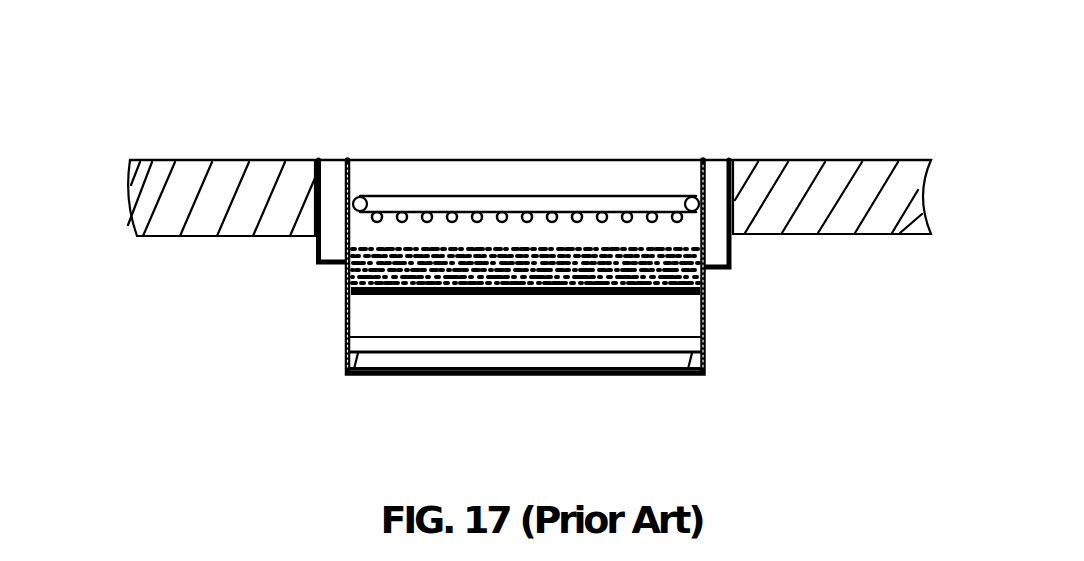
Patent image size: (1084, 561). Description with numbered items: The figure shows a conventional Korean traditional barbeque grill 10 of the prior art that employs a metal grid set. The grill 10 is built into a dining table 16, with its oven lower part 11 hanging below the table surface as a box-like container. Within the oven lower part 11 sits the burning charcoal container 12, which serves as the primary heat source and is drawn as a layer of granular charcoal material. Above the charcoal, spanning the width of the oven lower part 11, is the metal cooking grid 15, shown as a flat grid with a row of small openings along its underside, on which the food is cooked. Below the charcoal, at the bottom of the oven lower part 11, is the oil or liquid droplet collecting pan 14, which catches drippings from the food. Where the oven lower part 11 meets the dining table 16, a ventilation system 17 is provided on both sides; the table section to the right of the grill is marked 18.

The Korean traditional barbeque grill 10 is at (404, 90).
The oven lower part 11 is at (707, 313).
The burning charcoal container 12 is at (345, 289).
The oil or liquid droplet collecting pan 14 is at (652, 378).
The metal cooking grid 15 is at (550, 193).
The dining table 16 is at (203, 158).
The ventilation system 17 is at (326, 158).
The right panel 18 is at (850, 158).